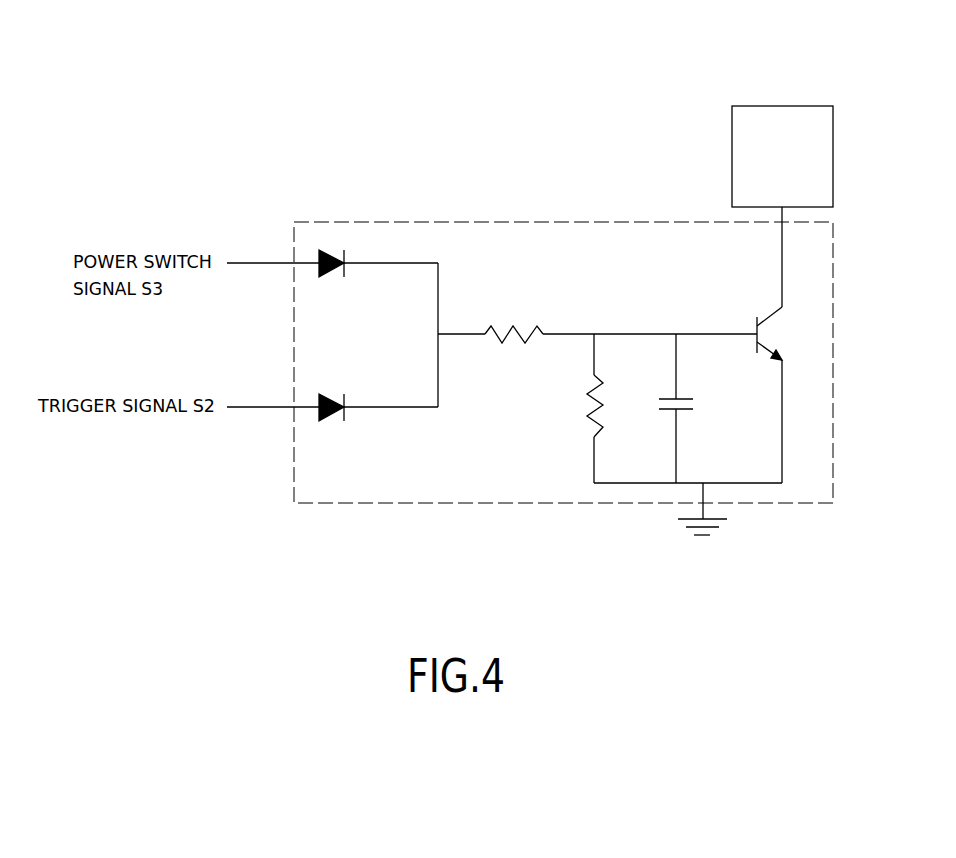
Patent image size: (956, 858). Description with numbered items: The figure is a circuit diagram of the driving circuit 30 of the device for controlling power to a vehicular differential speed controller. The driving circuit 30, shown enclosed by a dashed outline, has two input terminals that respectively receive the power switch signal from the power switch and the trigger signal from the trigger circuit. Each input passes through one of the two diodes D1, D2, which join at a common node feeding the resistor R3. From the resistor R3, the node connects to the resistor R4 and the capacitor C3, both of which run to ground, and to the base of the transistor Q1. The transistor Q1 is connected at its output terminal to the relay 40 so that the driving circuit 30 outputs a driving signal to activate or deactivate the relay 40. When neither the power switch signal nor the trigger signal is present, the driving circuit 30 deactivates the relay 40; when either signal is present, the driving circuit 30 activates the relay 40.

The driving circuit 30 is at (760, 503).
The relay 40 is at (781, 113).
The diode D1 is at (378, 256).
The diode D2 is at (378, 400).
The resistor R3 is at (514, 321).
The resistor R4 is at (609, 408).
The capacitor C3 is at (683, 408).
The transistor Q1 is at (786, 345).